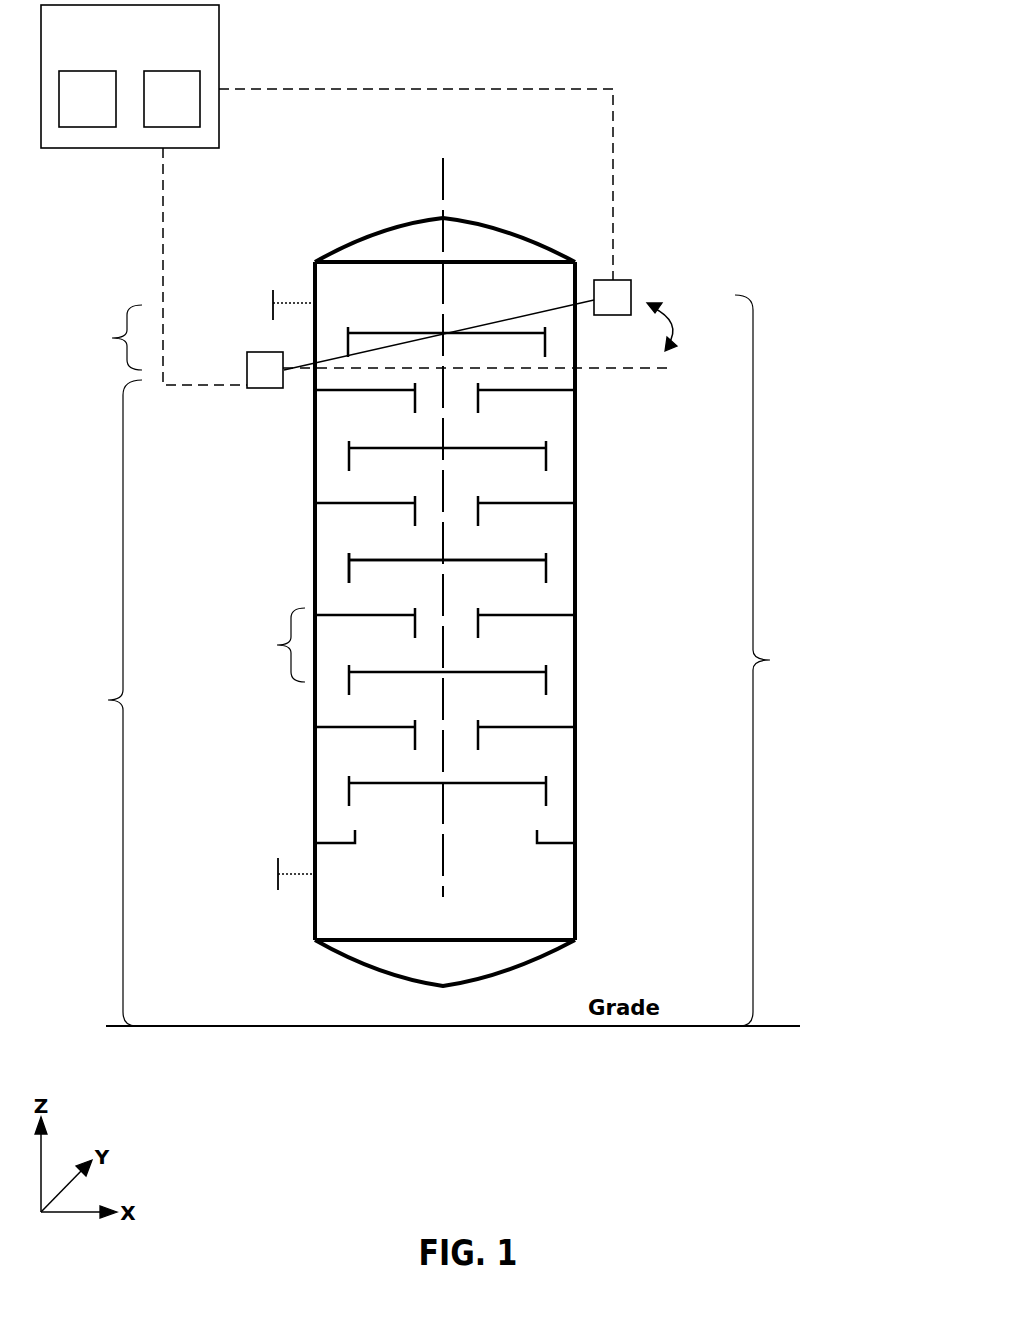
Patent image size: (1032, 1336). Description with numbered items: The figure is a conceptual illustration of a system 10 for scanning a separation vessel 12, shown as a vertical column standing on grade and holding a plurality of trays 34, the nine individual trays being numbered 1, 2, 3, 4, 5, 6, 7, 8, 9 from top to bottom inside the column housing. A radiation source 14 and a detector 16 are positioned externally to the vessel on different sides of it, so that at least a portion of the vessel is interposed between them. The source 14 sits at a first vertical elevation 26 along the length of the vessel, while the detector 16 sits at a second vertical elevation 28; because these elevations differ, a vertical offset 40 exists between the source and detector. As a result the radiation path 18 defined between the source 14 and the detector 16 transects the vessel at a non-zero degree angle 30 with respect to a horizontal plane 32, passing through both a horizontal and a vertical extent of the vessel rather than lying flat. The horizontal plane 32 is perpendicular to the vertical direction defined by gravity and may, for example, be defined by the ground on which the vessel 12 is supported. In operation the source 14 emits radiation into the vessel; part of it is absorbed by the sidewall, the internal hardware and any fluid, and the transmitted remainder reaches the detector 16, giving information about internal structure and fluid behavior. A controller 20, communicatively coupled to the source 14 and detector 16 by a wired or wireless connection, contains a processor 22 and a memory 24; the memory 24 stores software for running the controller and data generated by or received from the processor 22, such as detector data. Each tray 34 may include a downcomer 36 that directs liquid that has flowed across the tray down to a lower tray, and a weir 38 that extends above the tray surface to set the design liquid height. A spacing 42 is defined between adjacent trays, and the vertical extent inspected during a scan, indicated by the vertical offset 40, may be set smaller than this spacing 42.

The system 10 is at (866, 151).
The separation vessel 12 is at (578, 790).
The radiation source 14 is at (633, 296).
The detector 16 is at (258, 389).
The radiation path 18 is at (300, 366).
The controller 20 is at (327, 195).
The processor 22 is at (87, 99).
The memory 24 is at (172, 99).
The first vertical elevation 26 is at (775, 660).
The second vertical elevation 28 is at (106, 703).
The non-zero degree angle 30 is at (677, 327).
The horizontal plane 32 is at (494, 368).
The trays 34 is at (366, 560).
The downcomer 36 is at (322, 568).
The weir 38 is at (350, 556).
The vertical offset 40 is at (109, 337).
The spacing 42 is at (271, 645).
The tray 1 is at (446, 329).
The tray 2 is at (445, 387).
The tray 3 is at (447, 444).
The tray 4 is at (445, 500).
The tray 5 is at (447, 556).
The tray 6 is at (445, 612).
The tray 7 is at (447, 668).
The tray 8 is at (445, 724).
The tray 9 is at (447, 779).